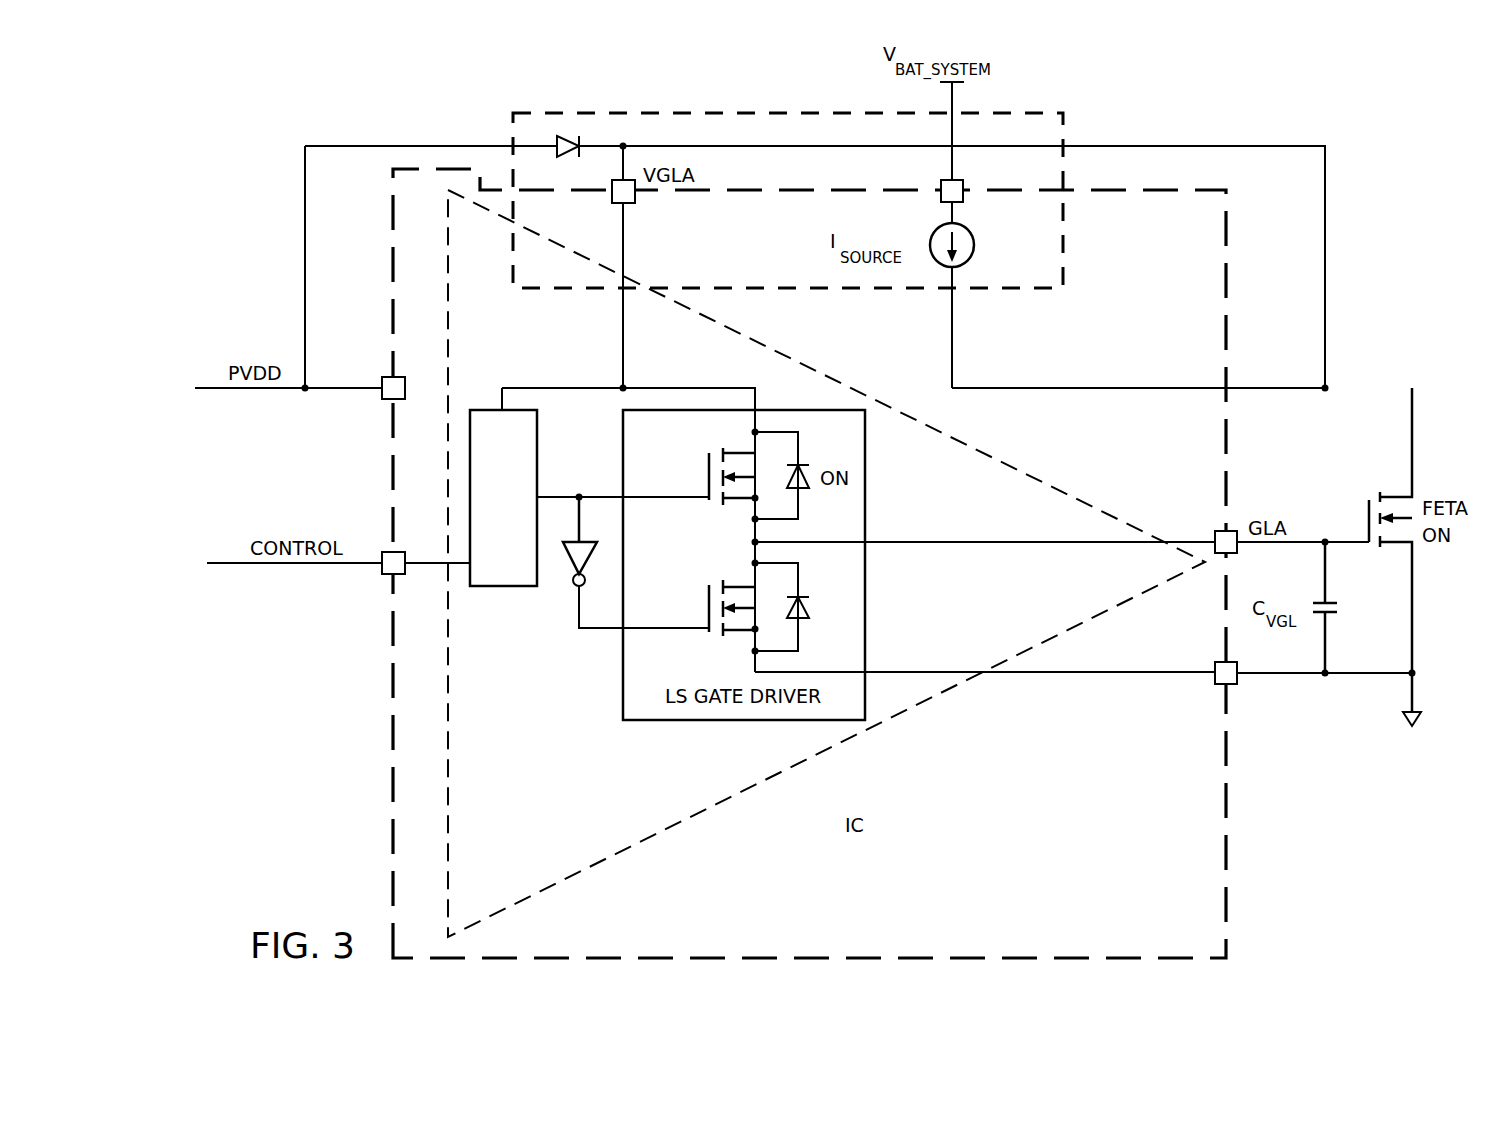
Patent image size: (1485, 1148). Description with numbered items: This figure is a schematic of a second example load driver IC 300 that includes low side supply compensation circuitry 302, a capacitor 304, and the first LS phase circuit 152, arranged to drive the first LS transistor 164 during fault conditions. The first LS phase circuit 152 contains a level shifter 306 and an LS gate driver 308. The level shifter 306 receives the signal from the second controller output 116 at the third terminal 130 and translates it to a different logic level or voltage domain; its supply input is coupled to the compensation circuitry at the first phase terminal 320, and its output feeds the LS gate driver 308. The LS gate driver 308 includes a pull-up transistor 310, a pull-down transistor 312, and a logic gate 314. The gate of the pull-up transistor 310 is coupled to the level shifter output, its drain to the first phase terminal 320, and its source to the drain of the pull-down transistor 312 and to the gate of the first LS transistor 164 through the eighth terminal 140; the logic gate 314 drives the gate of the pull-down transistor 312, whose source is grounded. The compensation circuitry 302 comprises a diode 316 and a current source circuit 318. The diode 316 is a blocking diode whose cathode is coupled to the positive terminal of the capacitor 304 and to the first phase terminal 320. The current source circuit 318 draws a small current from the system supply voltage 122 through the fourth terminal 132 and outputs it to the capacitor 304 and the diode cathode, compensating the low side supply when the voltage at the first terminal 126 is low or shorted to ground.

The second controller output 116 is at (298, 566).
The system supply voltage 122 is at (962, 86).
The first terminal 126 is at (382, 385).
The third terminal 130 is at (382, 574).
The fourth terminal 132 is at (963, 191).
The eighth terminal 140 is at (1237, 553).
The first LS phase circuit 152 is at (828, 752).
The first LS transistor 164 is at (1369, 506).
The second example load driver IC 300 is at (393, 692).
The low side supply compensation circuitry 302 is at (761, 113).
The capacitor 304 is at (1337, 609).
The level shifter 306 is at (537, 466).
The LS gate driver 308 is at (695, 722).
The pull-up transistor 310 is at (709, 466).
The pull-down transistor 312 is at (709, 599).
The logic gate 314 is at (569, 559).
The diode 316 is at (570, 133).
The current source circuit 318 is at (974, 246).
The first phase terminal 320 is at (612, 199).